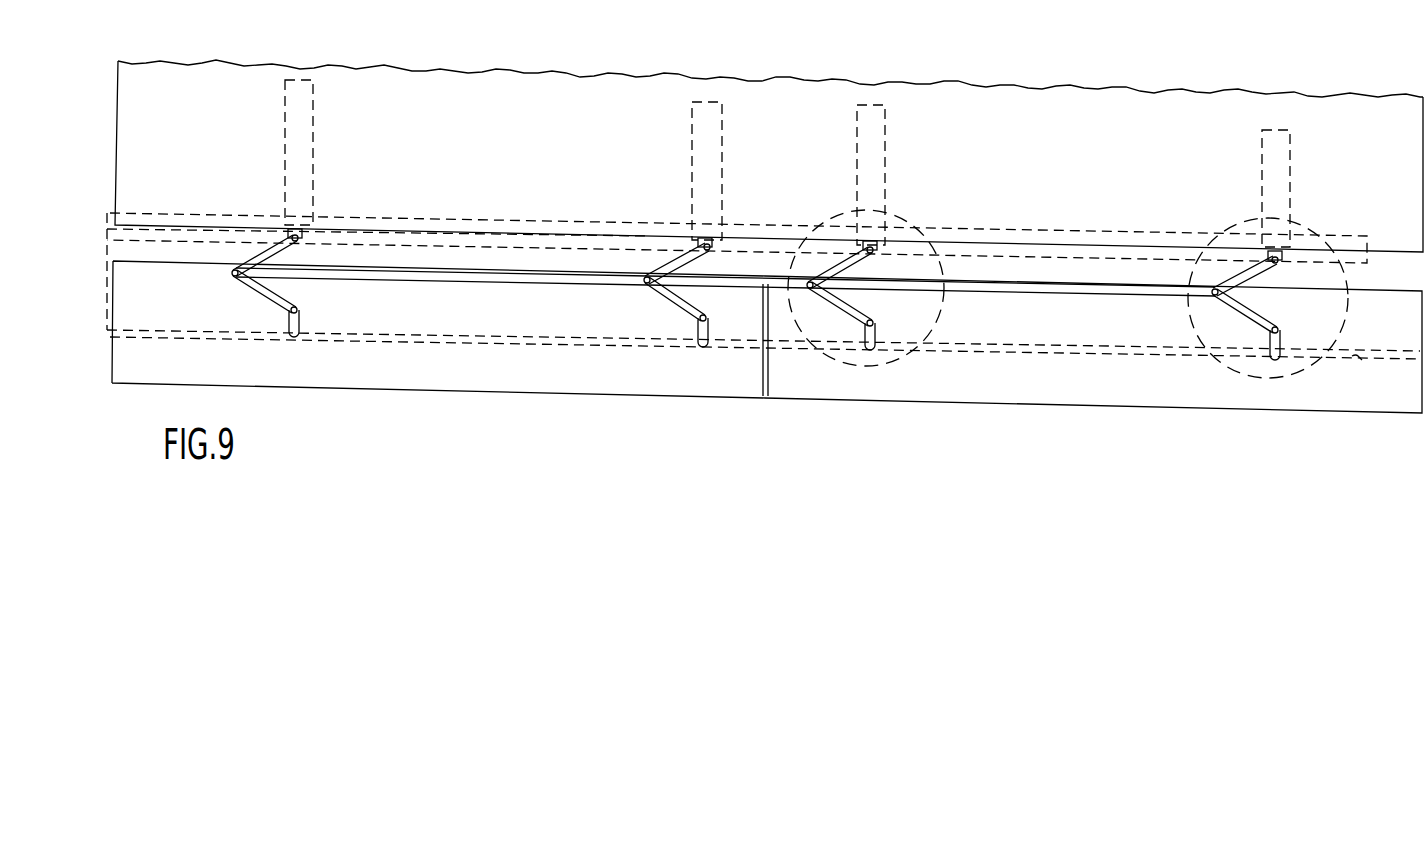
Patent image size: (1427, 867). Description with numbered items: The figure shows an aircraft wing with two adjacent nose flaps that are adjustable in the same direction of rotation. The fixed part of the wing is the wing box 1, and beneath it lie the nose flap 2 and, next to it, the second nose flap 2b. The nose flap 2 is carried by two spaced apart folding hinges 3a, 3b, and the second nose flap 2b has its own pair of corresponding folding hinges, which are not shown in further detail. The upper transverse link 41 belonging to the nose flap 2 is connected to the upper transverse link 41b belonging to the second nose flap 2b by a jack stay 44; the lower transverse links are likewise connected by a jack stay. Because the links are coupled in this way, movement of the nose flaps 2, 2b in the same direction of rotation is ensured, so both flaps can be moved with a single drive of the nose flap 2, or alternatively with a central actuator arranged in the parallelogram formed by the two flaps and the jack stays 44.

The wing box 1 is at (460, 112).
The nose flap 2 is at (943, 370).
The second nose flap 2b is at (383, 353).
The folding hinge 3a is at (853, 365).
The folding hinge 3b is at (1293, 373).
The upper transverse link 41 is at (1000, 291).
The upper transverse link 41b is at (496, 280).
The jack stay 44 is at (735, 278).